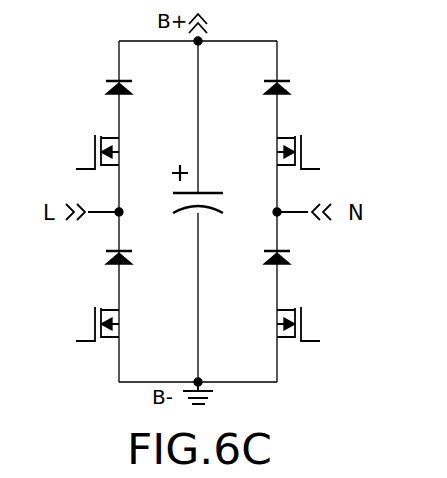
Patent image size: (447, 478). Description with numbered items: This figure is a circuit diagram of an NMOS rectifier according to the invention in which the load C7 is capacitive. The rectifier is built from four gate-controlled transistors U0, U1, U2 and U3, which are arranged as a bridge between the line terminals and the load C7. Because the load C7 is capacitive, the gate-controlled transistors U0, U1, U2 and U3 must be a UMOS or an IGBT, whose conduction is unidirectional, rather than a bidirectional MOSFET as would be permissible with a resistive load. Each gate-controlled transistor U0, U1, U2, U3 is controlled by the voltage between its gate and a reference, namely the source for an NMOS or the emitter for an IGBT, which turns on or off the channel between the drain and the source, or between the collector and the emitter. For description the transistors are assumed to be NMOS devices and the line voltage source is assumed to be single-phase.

The gate-controlled transistor U0 is at (285, 149).
The gate-controlled transistor U1 is at (119, 149).
The gate-controlled transistor U2 is at (119, 321).
The gate-controlled transistor U3 is at (285, 321).
The load C7 is at (185, 191).